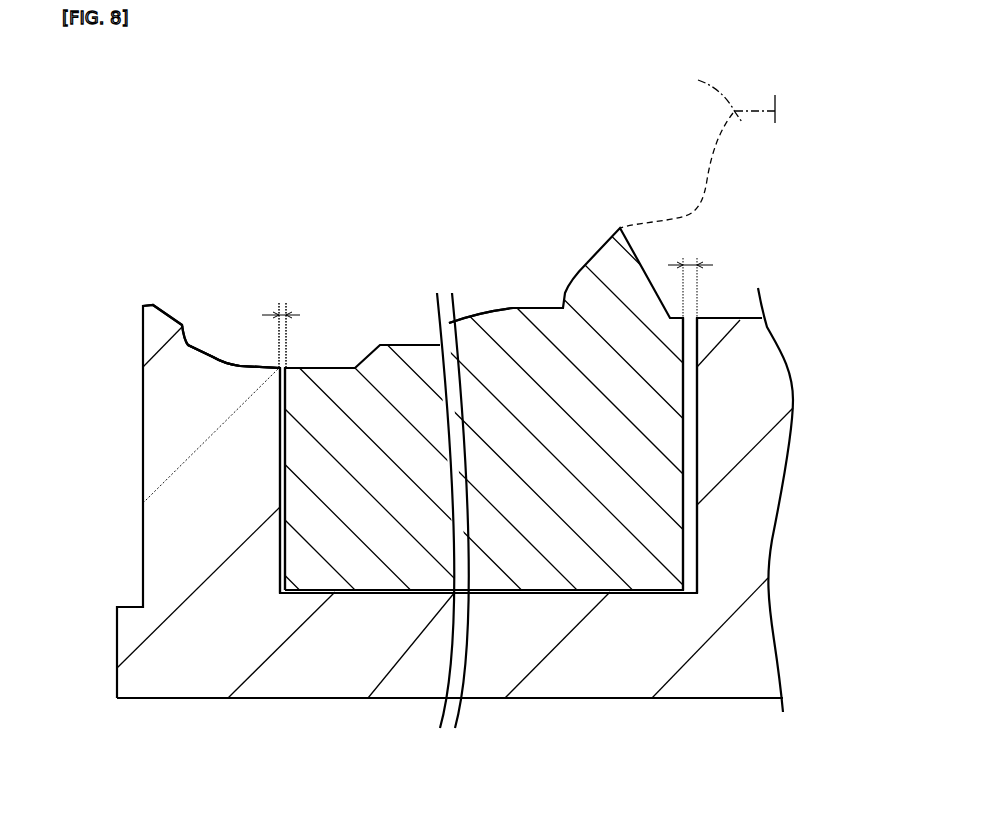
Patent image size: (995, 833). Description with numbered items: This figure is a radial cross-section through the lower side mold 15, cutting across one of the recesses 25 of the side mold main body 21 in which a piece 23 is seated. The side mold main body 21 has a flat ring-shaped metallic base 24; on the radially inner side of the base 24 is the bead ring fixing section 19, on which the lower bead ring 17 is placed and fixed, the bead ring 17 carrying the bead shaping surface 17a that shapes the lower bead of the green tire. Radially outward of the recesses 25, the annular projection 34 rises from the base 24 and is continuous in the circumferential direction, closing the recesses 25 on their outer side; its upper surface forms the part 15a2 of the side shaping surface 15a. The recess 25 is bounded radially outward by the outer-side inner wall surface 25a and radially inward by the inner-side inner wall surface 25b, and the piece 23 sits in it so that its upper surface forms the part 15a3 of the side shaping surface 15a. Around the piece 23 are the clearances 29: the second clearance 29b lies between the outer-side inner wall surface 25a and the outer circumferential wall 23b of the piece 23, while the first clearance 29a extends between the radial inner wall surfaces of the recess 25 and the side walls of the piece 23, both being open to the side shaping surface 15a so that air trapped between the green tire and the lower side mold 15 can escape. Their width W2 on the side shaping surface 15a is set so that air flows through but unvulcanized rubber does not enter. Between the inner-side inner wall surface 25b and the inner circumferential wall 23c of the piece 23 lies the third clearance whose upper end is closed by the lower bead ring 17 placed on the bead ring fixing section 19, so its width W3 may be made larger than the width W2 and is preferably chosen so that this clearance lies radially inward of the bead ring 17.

The lower side mold 15 is at (424, 100).
The side shaping surface 15a is at (234, 356).
The side shaping surface part 15a2 is at (217, 357).
The side shaping surface part 15a3 is at (513, 307).
The lower bead ring 17 is at (723, 95).
The bead shaping surface 17a is at (700, 197).
The bead ring fixing section 19 is at (728, 317).
The side mold main body 21 is at (140, 300).
The piece 23 is at (400, 363).
The outer circumferential wall 23b is at (283, 452).
The inner circumferential wall 23c is at (685, 506).
The base 24 is at (400, 632).
The recess 25 is at (508, 592).
The outer-side inner wall surface 25a is at (281, 535).
The inner-side inner wall surface 25b is at (695, 549).
The clearance 29 is at (282, 335).
The first clearance 29a is at (287, 366).
The second clearance 29b is at (700, 314).
The annular projection 34 is at (193, 418).
The width of second clearance W2 is at (283, 312).
The width of third clearance W3 is at (688, 262).